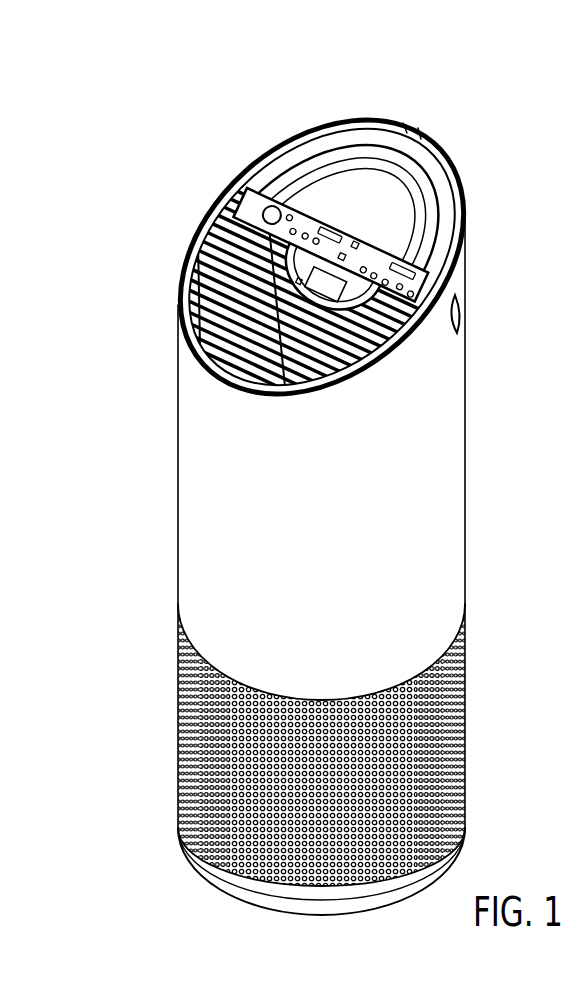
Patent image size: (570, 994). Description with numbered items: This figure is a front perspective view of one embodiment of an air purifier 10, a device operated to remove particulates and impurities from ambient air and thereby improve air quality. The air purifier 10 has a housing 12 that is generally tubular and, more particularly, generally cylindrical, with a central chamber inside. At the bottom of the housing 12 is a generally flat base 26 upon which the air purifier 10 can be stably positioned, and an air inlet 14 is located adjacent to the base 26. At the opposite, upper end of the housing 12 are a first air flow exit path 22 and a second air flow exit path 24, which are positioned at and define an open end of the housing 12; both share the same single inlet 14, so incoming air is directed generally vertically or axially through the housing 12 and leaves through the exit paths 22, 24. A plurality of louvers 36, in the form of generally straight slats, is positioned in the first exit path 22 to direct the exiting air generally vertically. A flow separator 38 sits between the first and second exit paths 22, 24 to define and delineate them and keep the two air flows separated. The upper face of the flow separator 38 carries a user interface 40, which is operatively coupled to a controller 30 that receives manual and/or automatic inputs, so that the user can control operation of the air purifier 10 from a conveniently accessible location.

The air purifier 10 is at (532, 116).
The housing 12 is at (455, 440).
The air inlet 14 is at (468, 758).
The first air flow exit path 22 is at (412, 244).
The second air flow exit path 24 is at (233, 280).
The base 26 is at (258, 893).
The controller 30 is at (273, 212).
The louvers 36 is at (193, 352).
The flow separator 38 is at (368, 250).
The user interface 40 is at (340, 235).